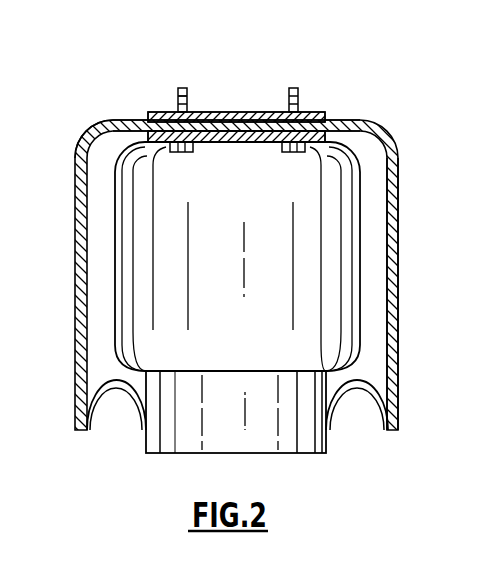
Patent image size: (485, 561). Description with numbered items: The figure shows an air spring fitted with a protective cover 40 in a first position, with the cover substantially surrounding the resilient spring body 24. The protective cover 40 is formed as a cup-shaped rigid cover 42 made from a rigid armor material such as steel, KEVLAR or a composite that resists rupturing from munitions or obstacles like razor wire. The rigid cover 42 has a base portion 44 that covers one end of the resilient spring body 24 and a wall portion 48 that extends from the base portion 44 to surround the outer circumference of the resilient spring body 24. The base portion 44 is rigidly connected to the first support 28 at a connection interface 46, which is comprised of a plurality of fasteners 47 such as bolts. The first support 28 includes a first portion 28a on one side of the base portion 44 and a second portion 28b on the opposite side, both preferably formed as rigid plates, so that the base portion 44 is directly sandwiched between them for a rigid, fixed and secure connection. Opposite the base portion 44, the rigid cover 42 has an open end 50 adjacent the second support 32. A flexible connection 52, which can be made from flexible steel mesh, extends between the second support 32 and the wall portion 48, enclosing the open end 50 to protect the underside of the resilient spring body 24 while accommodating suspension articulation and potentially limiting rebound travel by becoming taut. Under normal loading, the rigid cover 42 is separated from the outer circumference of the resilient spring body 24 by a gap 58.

The resilient spring body 24 is at (362, 147).
The first support 28 is at (240, 122).
The first portion 28a is at (195, 112).
The second portion 28b is at (237, 143).
The second support 32 is at (285, 435).
The protective cover 40 is at (68, 168).
The rigid cover 42 is at (88, 125).
The base portion 44 is at (342, 123).
The connection interface 46 is at (173, 74).
The fasteners 47 is at (178, 96).
The wall portion 48 is at (393, 305).
The open end 50 is at (358, 440).
The flexible connection 52 is at (117, 390).
The gap 58 is at (370, 253).